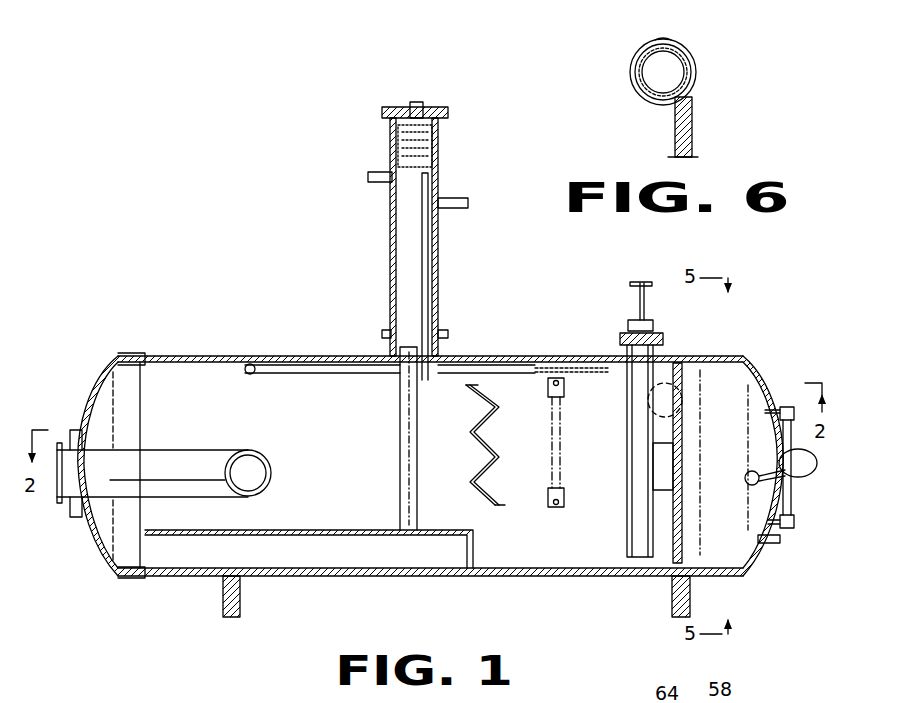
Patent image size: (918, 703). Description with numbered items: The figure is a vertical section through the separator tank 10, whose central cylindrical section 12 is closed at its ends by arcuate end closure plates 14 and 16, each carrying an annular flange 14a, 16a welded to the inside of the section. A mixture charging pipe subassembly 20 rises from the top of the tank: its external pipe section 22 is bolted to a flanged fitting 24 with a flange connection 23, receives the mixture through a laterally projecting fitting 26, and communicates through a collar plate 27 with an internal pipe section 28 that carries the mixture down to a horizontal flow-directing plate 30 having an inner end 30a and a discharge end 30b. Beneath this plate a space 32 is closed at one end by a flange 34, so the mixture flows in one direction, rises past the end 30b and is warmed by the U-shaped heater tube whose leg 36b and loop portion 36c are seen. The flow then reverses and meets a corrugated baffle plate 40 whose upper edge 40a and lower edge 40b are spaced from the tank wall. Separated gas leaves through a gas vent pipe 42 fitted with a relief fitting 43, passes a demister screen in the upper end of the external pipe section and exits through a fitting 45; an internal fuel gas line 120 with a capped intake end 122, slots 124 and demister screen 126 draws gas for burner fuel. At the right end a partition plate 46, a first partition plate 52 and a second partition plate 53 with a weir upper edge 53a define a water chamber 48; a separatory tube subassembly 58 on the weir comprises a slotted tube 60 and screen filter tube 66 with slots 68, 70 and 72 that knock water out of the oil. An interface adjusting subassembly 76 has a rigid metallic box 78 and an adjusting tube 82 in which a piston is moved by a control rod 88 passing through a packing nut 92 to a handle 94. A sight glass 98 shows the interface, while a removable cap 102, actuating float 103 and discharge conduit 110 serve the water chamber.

In FIG. 1, the tank 10 is at (255, 338).
In FIG. 1, the central cylindrical section 12 is at (497, 361).
In FIG. 1, the end closure plate 14 is at (102, 390).
In FIG. 1, the annular flange 14a is at (140, 577).
In FIG. 1, the end closure plate 16 is at (758, 385).
In FIG. 1, the annular flange 16a is at (655, 562).
In FIG. 1, the mixture charging pipe subassembly 20 is at (417, 225).
In FIG. 1, the external pipe section 22 is at (392, 230).
In FIG. 1, the flange 23 is at (386, 330).
In FIG. 1, the flanged fitting 24 is at (388, 340).
In FIG. 1, the laterally projecting fitting 26 is at (456, 200).
In FIG. 1, the collar plate 27 is at (404, 383).
In FIG. 1, the internal pipe section 28 is at (400, 452).
In FIG. 1, the flow-directing plate 30 is at (262, 531).
In FIG. 1, the inner end 30a is at (462, 532).
In FIG. 1, the discharge end 30b is at (148, 531).
In FIG. 1, the space 32 is at (324, 563).
In FIG. 1, the flange 34 is at (475, 556).
In FIG. 1, the leg 36b is at (178, 458).
In FIG. 1, the web or loop portion 36c is at (272, 475).
In FIG. 1, the corrugated baffle plate 40 is at (488, 445).
In FIG. 1, the upper edge 40a is at (468, 390).
In FIG. 1, the lower edge 40b is at (497, 502).
In FIG. 1, the gas vent pipe 42 is at (420, 213).
In FIG. 1, the fitting 43 is at (372, 176).
In FIG. 1, the fitting 45 is at (420, 104).
In FIG. 1, the partition plate 46 is at (744, 447).
In FIG. 1, the water chamber 48 is at (768, 499).
In FIG. 1, the first partition plate 52 is at (682, 530).
In FIG. 6, the second partition plate 53 is at (690, 138).
In FIG. 6, the upper edge 53a is at (690, 108).
In FIG. 6, the separatory tube subassembly 58 is at (630, 86).
In FIG. 1, the slotted tube 60 is at (680, 362).
In FIG. 6, the slotted tube 60 is at (690, 44).
In FIG. 6, the screen filter tube 66 is at (660, 36).
In FIG. 1, the slot 68 is at (684, 405).
In FIG. 6, the slot 68 is at (632, 72).
In FIG. 6, the slot 70 is at (662, 104).
In FIG. 6, the slot 72 is at (696, 72).
In FIG. 1, the interface adjusting subassembly 76 is at (645, 400).
In FIG. 1, the rigid metallic box 78 is at (668, 468).
In FIG. 1, the adjusting tube 82 is at (632, 540).
In FIG. 1, the control rod 88 is at (646, 302).
In FIG. 1, the packing nut 92 is at (656, 327).
In FIG. 1, the handle 94 is at (642, 282).
In FIG. 1, the sight glass 98 is at (562, 455).
In FIG. 1, the removable cap 102 is at (812, 470).
In FIG. 1, the actuating float 103 is at (762, 486).
In FIG. 1, the discharge conduit 110 is at (780, 540).
In FIG. 1, the internal fuel gas line 120 is at (310, 356).
In FIG. 1, the capped intake end 122 is at (600, 386).
In FIG. 1, the slots 124 is at (545, 365).
In FIG. 1, the demister screen 126 is at (575, 368).